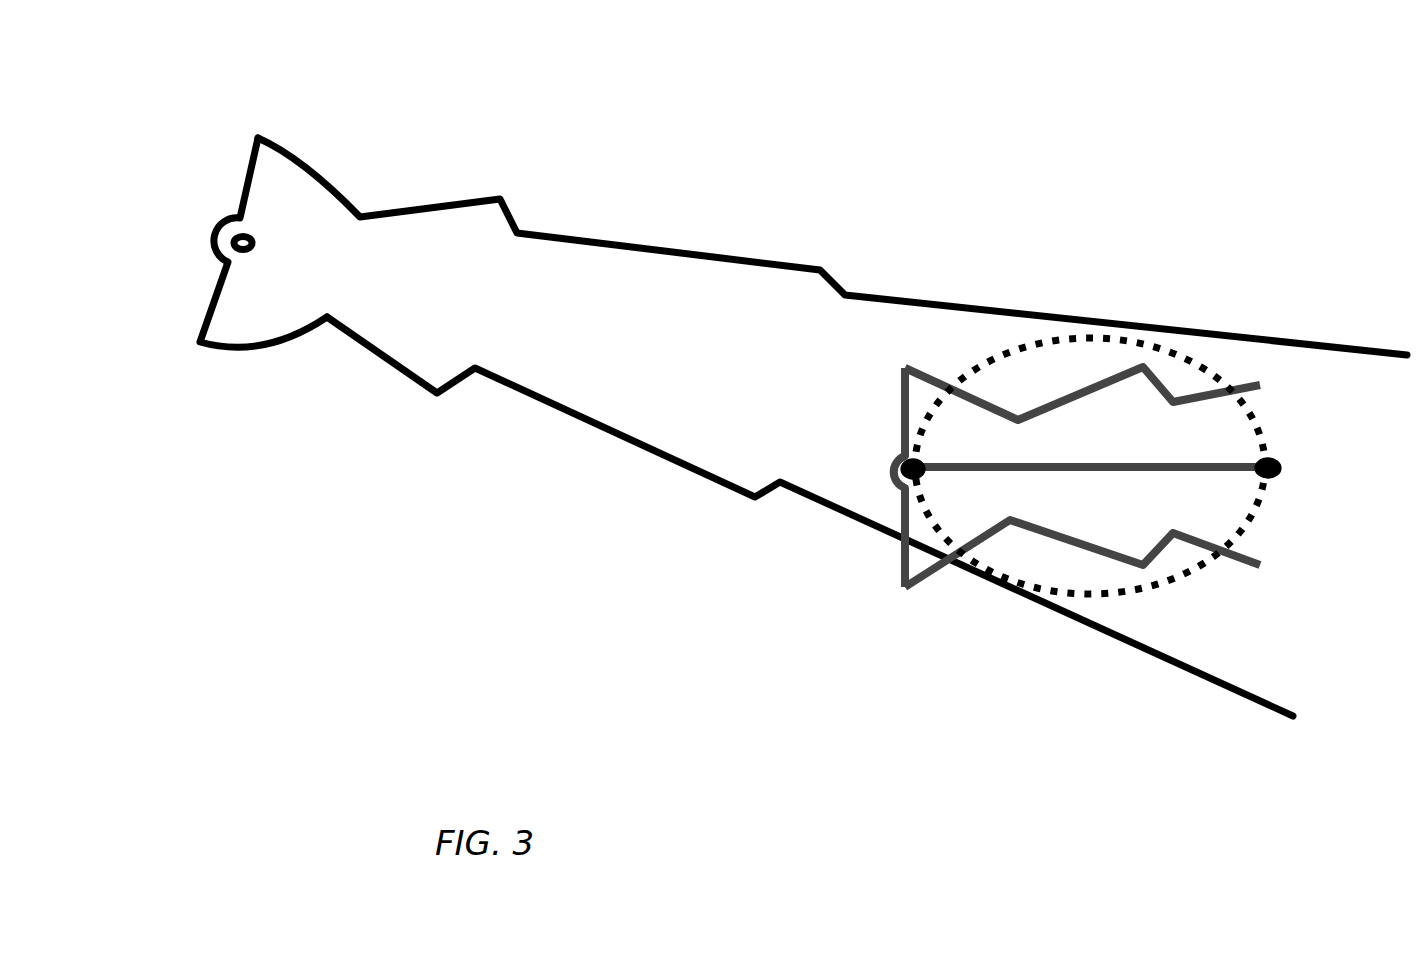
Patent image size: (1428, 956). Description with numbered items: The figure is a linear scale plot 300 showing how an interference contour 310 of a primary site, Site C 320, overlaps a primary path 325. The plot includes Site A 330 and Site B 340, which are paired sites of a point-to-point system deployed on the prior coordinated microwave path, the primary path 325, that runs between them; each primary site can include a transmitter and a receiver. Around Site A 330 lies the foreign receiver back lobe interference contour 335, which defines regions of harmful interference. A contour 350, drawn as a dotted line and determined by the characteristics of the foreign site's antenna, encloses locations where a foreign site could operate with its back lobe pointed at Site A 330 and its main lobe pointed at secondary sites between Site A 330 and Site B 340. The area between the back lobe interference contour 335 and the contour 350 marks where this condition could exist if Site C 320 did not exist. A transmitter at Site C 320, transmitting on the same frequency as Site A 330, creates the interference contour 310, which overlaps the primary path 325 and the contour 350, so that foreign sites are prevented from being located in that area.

The linear scale plot 300 is at (565, 72).
The interference contour 310 is at (443, 393).
The Site C 320 is at (252, 253).
The primary path 325 is at (1090, 463).
The Site A 330 is at (903, 462).
The foreign receiver back lobe interference contour 335 is at (903, 375).
The Site B 340 is at (1272, 480).
The contour 350 is at (1162, 573).